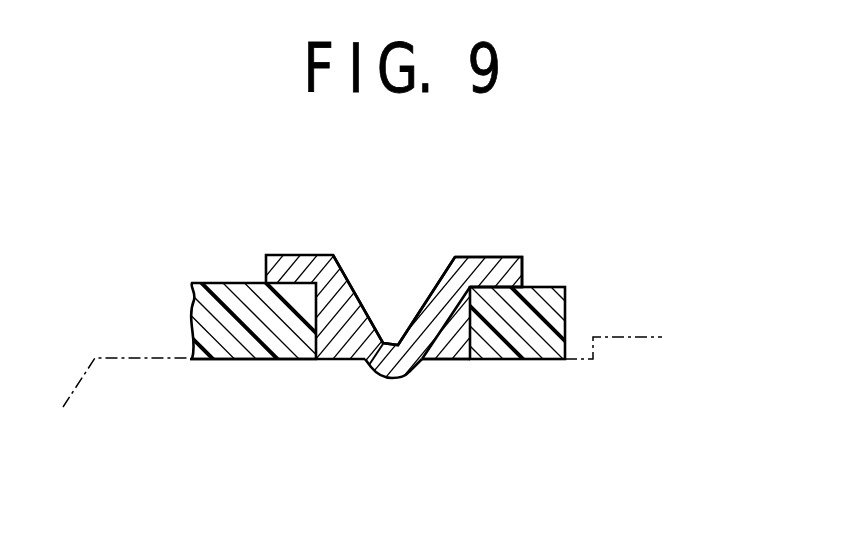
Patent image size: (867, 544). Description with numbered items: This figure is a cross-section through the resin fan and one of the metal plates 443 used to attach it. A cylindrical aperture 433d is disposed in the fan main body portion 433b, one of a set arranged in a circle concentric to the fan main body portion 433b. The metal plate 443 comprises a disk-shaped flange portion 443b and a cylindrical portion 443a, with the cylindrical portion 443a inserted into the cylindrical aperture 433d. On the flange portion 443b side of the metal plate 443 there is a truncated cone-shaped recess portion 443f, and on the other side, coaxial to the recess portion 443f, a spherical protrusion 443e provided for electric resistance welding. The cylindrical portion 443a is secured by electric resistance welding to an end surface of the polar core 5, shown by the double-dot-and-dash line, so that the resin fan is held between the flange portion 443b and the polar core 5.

The metal plate 443 is at (300, 255).
The truncated cone-shaped recess portion 443f is at (404, 302).
The spherical protrusion 443e is at (410, 377).
The cylindrical portion 443a is at (448, 343).
The flange portion 443b is at (500, 273).
The fan main body portion 433b is at (543, 303).
The cylindrical aperture 433d is at (328, 341).
The polar core 5 is at (620, 356).